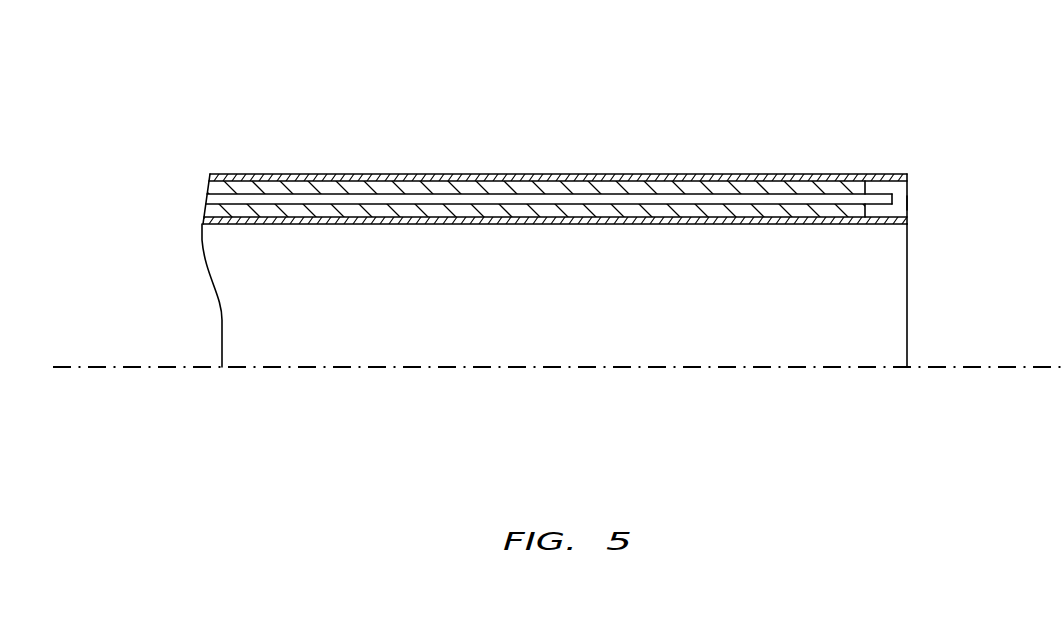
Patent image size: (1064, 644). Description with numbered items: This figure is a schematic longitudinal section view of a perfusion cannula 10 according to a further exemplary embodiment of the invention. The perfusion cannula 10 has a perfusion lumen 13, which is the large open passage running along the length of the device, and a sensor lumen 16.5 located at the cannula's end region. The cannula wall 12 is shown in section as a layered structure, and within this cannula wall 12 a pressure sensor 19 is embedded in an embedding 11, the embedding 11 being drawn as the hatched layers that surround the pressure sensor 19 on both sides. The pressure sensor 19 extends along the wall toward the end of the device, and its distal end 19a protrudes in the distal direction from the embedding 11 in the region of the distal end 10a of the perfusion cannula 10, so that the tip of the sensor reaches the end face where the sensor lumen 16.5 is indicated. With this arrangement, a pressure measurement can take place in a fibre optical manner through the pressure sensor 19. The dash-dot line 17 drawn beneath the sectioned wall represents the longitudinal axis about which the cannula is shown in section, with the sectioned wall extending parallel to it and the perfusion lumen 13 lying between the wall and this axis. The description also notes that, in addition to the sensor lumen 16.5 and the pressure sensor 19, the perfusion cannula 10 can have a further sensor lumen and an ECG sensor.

The perfusion cannula 10 is at (940, 70).
The distal end of the perfusion cannula 10a is at (920, 190).
The embedding 11 is at (238, 186).
The cannula wall 12 is at (588, 228).
The perfusion lumen 13 is at (878, 315).
The sensor lumen 16.5 is at (907, 203).
The central axis 17 is at (138, 367).
The pressure sensor 19 is at (520, 200).
The distal end of the pressure sensor 19a is at (873, 198).